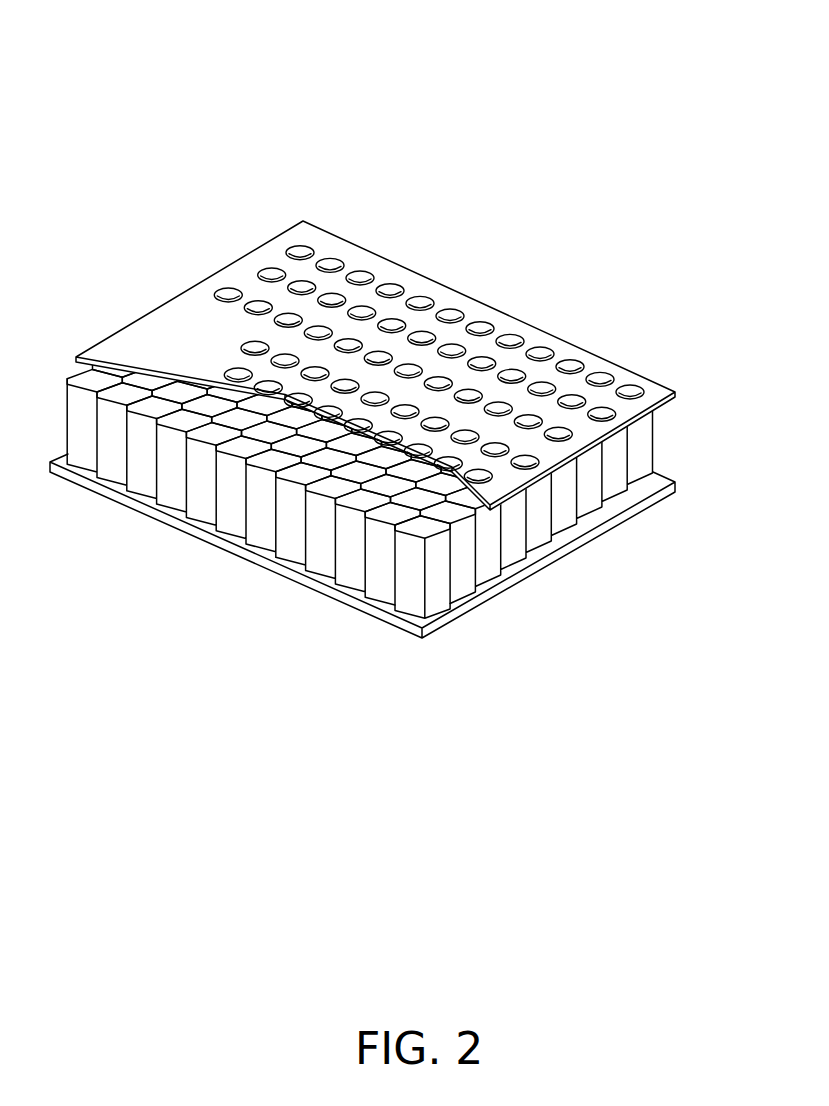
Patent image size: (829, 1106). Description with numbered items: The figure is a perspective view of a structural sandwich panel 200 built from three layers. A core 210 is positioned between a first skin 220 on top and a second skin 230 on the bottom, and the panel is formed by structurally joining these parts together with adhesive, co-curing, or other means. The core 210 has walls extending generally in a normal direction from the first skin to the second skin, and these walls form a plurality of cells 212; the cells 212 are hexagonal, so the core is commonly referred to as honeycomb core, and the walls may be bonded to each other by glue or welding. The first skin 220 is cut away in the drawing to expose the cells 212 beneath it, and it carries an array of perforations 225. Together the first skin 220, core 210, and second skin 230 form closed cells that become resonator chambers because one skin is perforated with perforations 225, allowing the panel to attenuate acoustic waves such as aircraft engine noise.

The structural sandwich panel 200 is at (166, 124).
The core 210 is at (424, 530).
The cells 212 is at (440, 572).
The first skin 220 is at (375, 312).
The perforations 225 is at (396, 286).
The second skin 230 is at (590, 540).